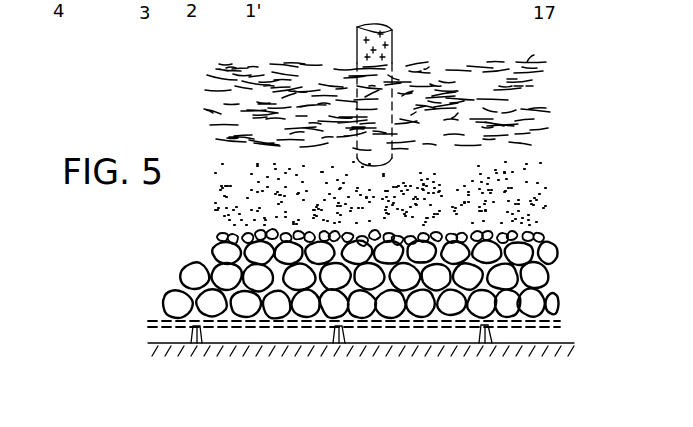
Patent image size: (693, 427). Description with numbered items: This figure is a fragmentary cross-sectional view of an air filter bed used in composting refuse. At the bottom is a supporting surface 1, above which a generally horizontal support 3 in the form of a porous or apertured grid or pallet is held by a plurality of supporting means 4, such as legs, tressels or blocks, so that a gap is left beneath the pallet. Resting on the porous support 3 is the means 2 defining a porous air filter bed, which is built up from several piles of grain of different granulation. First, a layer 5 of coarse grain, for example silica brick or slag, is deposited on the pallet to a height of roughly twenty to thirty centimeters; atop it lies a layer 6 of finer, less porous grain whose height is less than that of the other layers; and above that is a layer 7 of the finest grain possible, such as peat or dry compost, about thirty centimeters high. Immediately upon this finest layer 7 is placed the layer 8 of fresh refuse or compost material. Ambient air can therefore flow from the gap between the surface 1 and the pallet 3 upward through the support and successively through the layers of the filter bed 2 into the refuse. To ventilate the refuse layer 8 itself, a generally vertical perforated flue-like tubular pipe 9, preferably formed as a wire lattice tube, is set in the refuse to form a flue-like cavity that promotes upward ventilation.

The supporting surface 1 is at (314, 343).
The porous air filter bed 2 is at (411, 234).
The horizontal support 3 is at (272, 322).
The supporting means 4 is at (480, 337).
The coarse grain layer 5 is at (383, 279).
The fine grain layer 6 is at (575, 226).
The finest grain layer 7 is at (575, 150).
The layer of fresh refuse material 8 is at (577, 94).
The perforated flue-like tubular pipe 9 is at (395, 52).